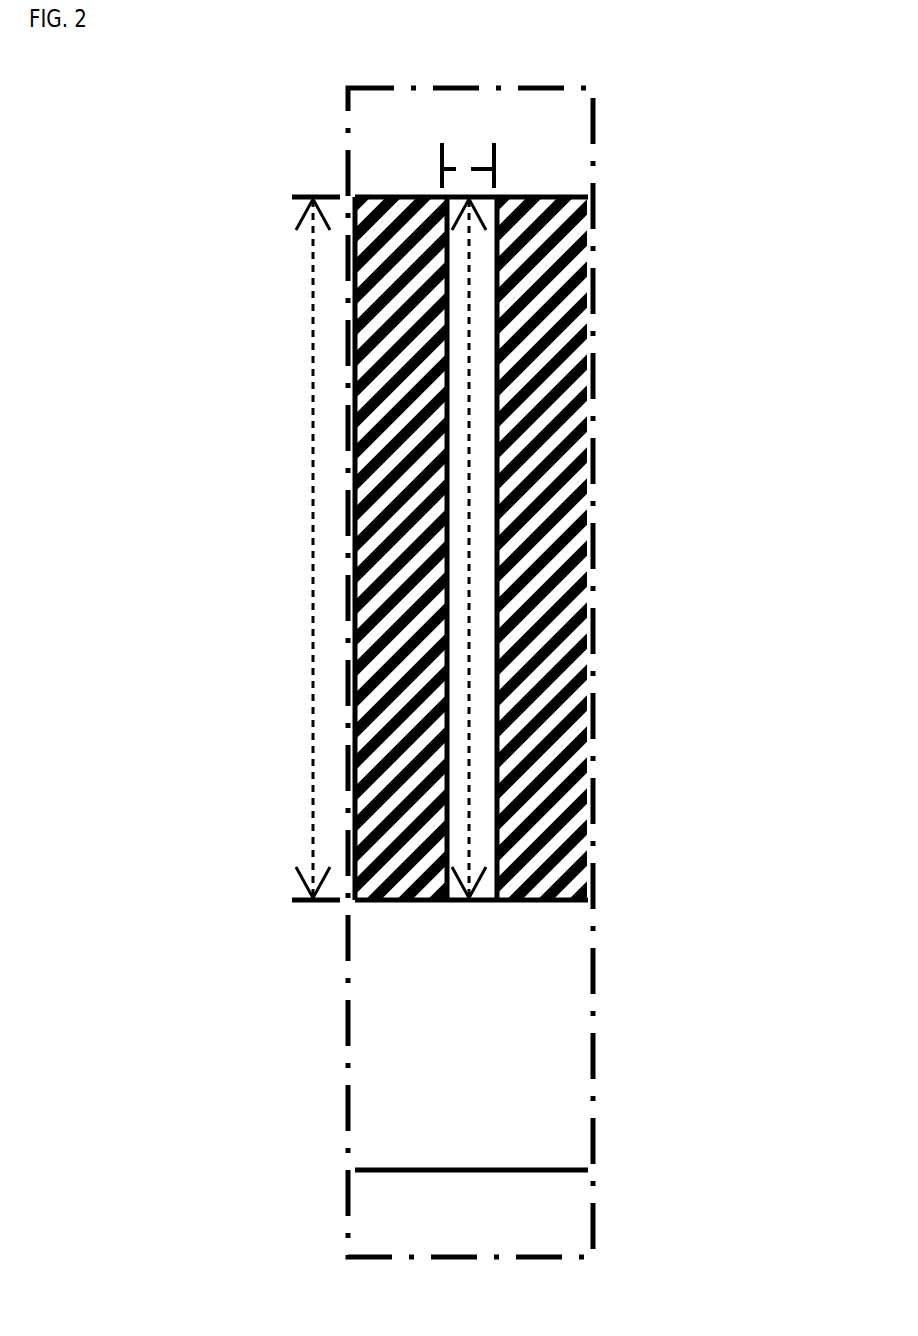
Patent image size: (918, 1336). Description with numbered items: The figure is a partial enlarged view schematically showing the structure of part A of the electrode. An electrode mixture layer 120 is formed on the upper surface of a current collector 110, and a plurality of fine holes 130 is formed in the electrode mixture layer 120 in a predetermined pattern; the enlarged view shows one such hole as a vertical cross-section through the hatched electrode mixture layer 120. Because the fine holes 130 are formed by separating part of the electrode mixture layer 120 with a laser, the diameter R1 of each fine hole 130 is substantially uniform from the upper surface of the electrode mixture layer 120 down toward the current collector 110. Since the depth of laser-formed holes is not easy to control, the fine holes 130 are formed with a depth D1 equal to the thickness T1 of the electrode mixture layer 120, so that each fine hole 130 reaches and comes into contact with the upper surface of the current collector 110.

The current collector 110 is at (537, 1035).
The electrode mixture layer 120 is at (375, 197).
The fine holes 130 is at (483, 285).
The thickness of the electrode mixture layer T1 is at (281, 548).
The depth of the fine holes D1 is at (467, 505).
The diameter of the fine holes R1 is at (470, 168).
The part A is at (118, 179).